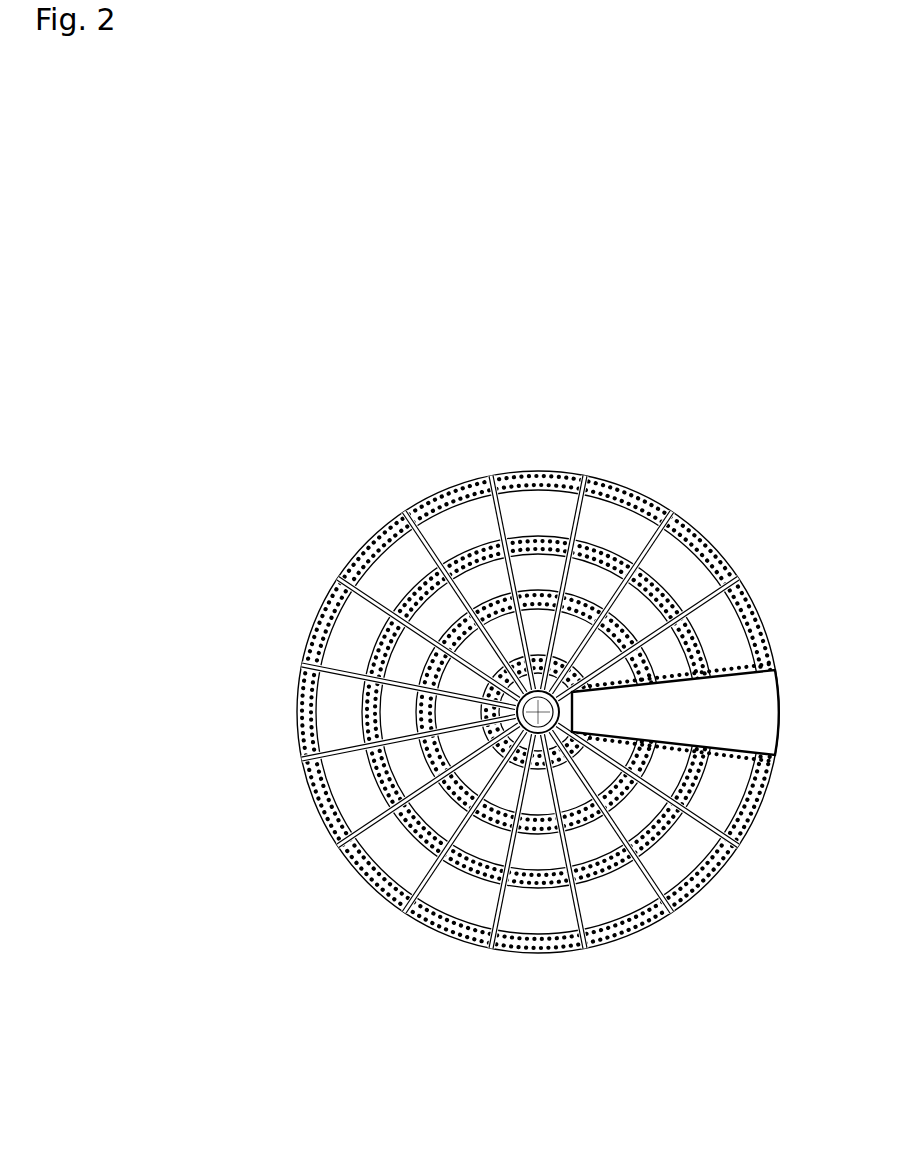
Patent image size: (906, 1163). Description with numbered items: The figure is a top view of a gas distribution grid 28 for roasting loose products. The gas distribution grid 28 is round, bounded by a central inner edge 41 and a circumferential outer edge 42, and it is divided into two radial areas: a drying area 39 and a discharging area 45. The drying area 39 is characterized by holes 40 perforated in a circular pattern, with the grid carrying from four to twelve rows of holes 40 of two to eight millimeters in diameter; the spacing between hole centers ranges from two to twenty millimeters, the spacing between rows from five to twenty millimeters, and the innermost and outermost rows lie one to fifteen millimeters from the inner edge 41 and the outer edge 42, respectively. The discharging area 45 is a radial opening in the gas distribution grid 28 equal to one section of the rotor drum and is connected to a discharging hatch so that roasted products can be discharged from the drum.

The gas distribution grid 28 is at (415, 458).
The drying area 39 is at (516, 712).
The holes 40 is at (449, 796).
The inner edge 41 is at (551, 734).
The outer edge 42 is at (674, 510).
The discharging area 45 is at (675, 712).